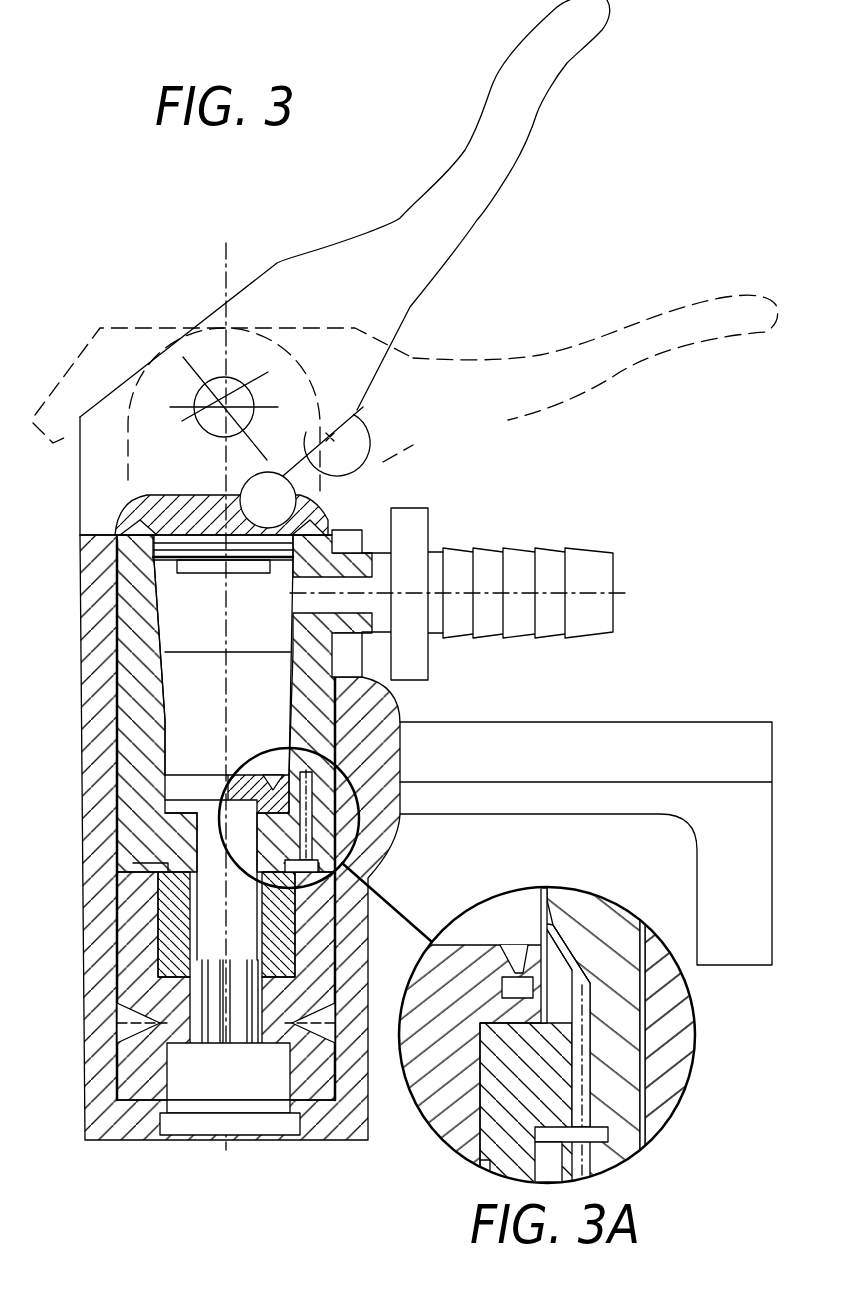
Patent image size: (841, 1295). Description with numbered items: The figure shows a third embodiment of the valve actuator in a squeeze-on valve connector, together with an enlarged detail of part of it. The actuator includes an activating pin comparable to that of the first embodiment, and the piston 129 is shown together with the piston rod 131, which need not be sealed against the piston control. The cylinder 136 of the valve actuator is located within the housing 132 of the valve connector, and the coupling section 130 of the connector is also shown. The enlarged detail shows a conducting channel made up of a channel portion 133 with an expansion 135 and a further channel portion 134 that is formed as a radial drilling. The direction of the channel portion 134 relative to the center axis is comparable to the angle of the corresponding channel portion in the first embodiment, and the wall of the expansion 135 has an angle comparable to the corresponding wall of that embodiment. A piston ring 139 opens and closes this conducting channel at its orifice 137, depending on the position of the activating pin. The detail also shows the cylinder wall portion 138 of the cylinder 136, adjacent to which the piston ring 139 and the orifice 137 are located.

In FIG. 3, the piston 129 is at (183, 810).
In FIG. 3, the coupling section 130 is at (252, 1088).
In FIG. 3, the piston rod 131 is at (212, 903).
In FIG. 3, the housing 132 is at (320, 693).
In FIG. 3A, the channel portion 133 is at (583, 1045).
In FIG. 3A, the channel portion 134 is at (563, 958).
In FIG. 3A, the expansion 135 is at (563, 1113).
In FIG. 3, the cylinder 136 is at (193, 705).
In FIG. 3A, the orifice 137 is at (535, 921).
In FIG. 3A, the cylinder wall portion 138 is at (541, 900).
In FIG. 3A, the piston ring 139 is at (527, 983).